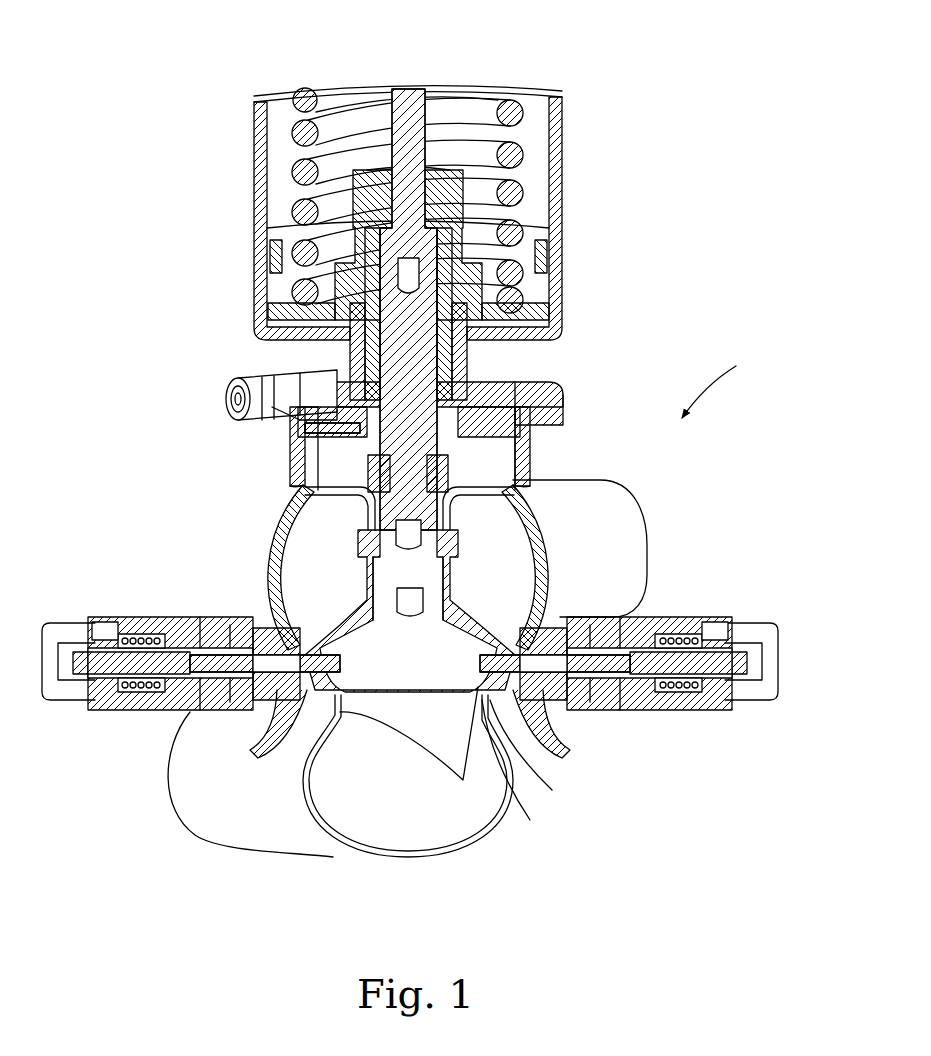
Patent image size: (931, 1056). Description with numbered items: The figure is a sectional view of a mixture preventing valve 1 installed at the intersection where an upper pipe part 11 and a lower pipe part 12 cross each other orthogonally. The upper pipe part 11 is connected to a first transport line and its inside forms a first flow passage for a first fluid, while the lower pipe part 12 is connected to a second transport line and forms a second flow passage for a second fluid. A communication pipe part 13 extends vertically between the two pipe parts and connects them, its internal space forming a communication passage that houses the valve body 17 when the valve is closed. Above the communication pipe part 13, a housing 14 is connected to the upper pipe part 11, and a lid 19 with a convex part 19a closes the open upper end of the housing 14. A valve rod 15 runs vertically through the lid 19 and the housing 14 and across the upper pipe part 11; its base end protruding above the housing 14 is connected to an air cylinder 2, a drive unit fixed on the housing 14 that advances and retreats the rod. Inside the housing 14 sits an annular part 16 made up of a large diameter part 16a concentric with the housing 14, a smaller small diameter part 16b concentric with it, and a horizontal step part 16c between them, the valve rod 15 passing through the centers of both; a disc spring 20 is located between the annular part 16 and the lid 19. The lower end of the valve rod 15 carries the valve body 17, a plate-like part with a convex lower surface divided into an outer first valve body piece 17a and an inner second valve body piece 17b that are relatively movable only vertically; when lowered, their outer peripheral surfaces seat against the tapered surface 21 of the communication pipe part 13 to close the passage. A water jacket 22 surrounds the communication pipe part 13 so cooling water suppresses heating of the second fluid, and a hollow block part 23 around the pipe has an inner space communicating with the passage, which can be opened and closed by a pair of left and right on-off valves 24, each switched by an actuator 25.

The mixture preventing valve 1 is at (716, 384).
The air cylinder 2 is at (566, 192).
The upper pipe part 11 is at (640, 578).
The lower pipe part 12 is at (318, 845).
The communication pipe part 13 is at (510, 765).
The housing 14 is at (522, 455).
The valve rod 15 is at (310, 460).
The annular part 16 is at (333, 507).
The large diameter part 16a is at (520, 477).
The small diameter part 16b is at (500, 392).
The step part 16c is at (522, 432).
The valve body 17 is at (343, 600).
The first valve body piece 17a is at (458, 605).
The second valve body piece 17b is at (440, 682).
The lid 19 is at (330, 372).
The convex part 19a is at (330, 420).
The disc spring 20 is at (520, 392).
The tapered surface 21 is at (520, 745).
The water jacket 22 is at (307, 703).
The hollow block part 23 is at (233, 712).
The on-off valve 24 is at (198, 712).
The actuator 25 is at (118, 712).